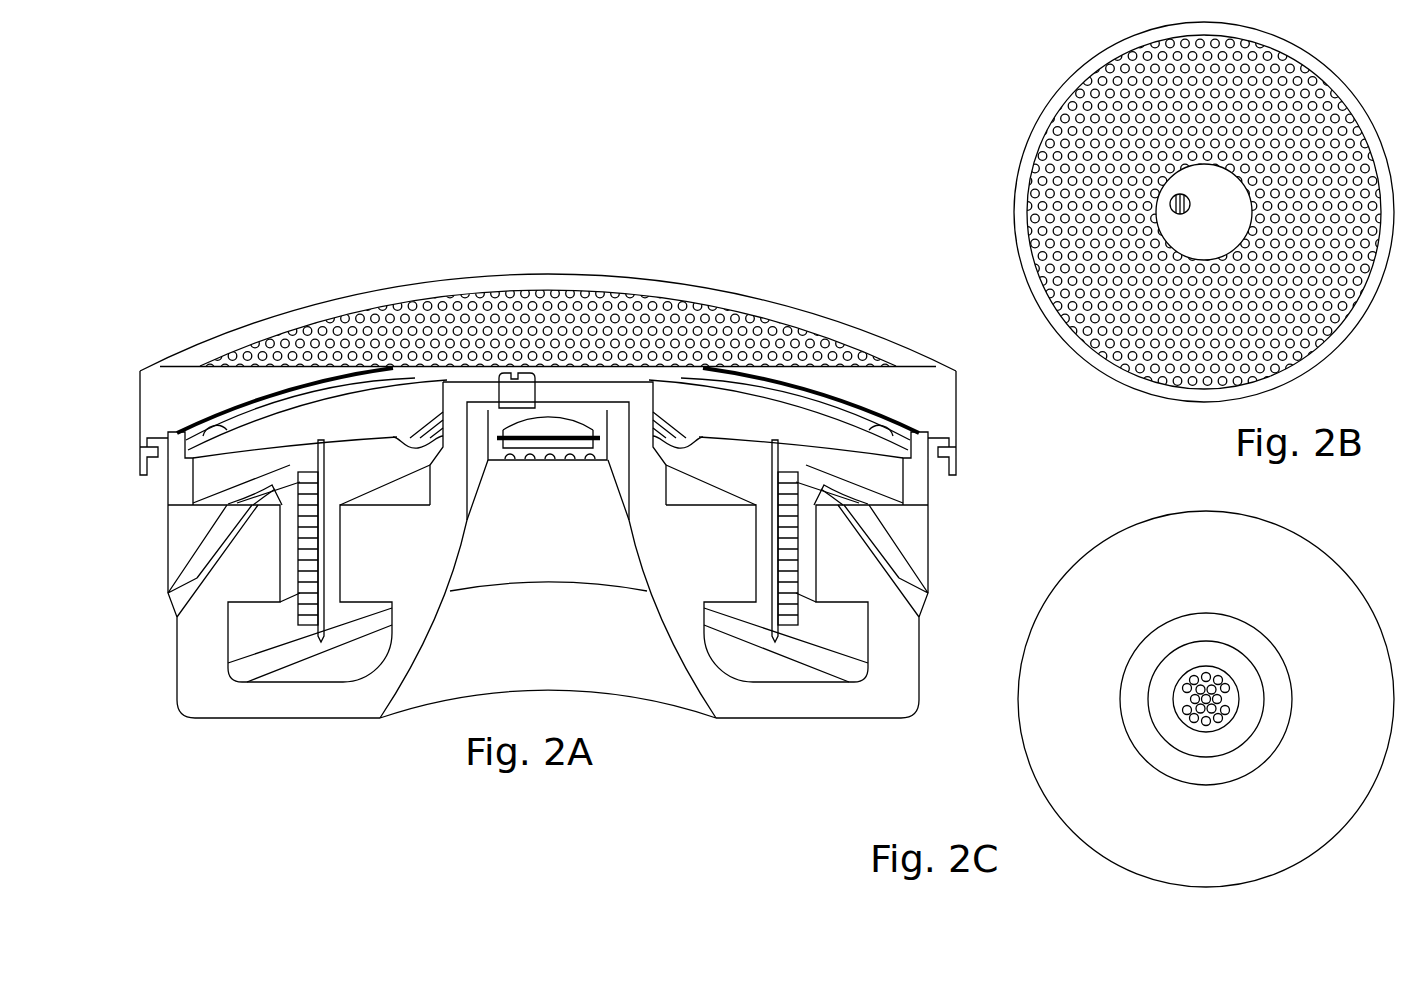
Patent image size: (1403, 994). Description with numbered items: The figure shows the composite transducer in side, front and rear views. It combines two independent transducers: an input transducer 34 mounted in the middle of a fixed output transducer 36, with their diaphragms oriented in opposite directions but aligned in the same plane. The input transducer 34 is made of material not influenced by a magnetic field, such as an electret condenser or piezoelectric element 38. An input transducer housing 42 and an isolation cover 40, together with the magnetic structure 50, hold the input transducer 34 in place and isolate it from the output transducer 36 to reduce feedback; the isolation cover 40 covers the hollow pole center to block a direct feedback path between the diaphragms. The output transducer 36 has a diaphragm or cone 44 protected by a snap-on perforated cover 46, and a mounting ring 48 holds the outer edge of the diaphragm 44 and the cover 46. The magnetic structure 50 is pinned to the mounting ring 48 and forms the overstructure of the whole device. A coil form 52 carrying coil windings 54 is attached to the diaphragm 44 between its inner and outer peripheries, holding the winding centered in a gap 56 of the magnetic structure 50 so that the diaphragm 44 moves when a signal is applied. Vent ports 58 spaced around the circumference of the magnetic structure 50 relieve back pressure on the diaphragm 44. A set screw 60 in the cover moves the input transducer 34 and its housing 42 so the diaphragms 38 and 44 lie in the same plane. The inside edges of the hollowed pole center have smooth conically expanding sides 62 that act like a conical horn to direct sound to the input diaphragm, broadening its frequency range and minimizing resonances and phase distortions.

In FIG. 2A, the input transducer 34 is at (548, 433).
In FIG. 2A, the output transducer 36 is at (750, 443).
In FIG. 2A, the piezoelectric element 38 is at (600, 458).
In FIG. 2C, the piezoelectric element 38 is at (1217, 730).
In FIG. 2A, the isolation cover 40 is at (445, 492).
In FIG. 2B, the isolation cover 40 is at (1240, 237).
In FIG. 2A, the input transducer housing 42 is at (582, 580).
In FIG. 2C, the input transducer housing 42 is at (1268, 712).
In FIG. 2A, the diaphragm 44 is at (768, 420).
In FIG. 2A, the snap-on perforated cover 46 is at (913, 347).
In FIG. 2B, the snap-on perforated cover 46 is at (1346, 90).
In FIG. 2A, the mounting ring 48 is at (917, 480).
In FIG. 2A, the magnetic structure 50 is at (927, 568).
In FIG. 2C, the magnetic structure 50 is at (1360, 582).
In FIG. 2A, the coil form 52 is at (753, 617).
In FIG. 2A, the coil windings 54 is at (785, 614).
In FIG. 2A, the gap 56 is at (762, 545).
In FIG. 2A, the vent ports 58 is at (917, 597).
In FIG. 2A, the set screw 60 is at (510, 390).
In FIG. 2B, the set screw 60 is at (1207, 199).
In FIG. 2A, the conically expanding sides 62 is at (421, 655).
In FIG. 2C, the conically expanding sides 62 is at (1278, 655).